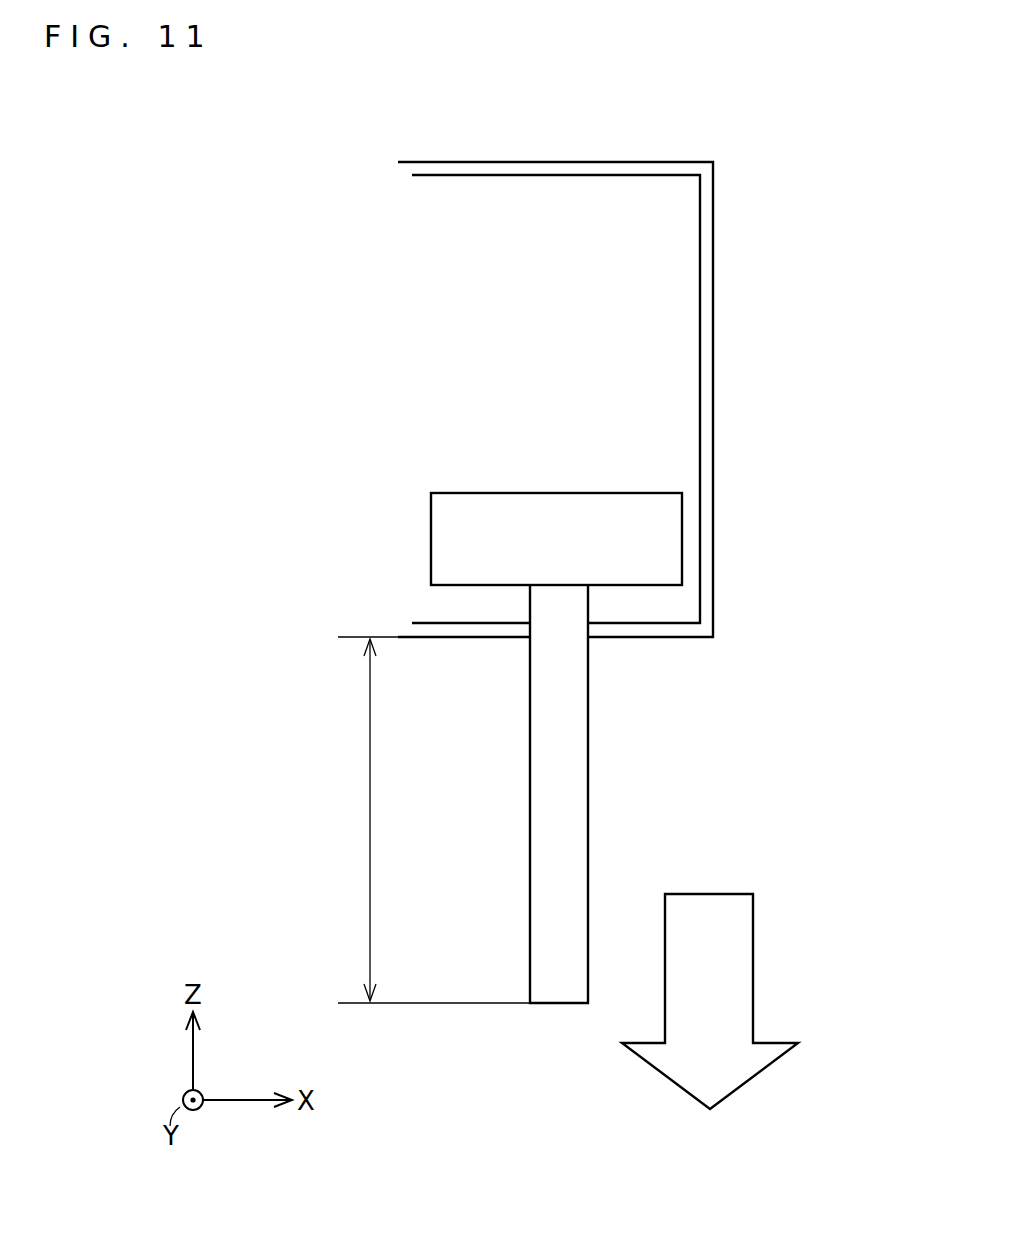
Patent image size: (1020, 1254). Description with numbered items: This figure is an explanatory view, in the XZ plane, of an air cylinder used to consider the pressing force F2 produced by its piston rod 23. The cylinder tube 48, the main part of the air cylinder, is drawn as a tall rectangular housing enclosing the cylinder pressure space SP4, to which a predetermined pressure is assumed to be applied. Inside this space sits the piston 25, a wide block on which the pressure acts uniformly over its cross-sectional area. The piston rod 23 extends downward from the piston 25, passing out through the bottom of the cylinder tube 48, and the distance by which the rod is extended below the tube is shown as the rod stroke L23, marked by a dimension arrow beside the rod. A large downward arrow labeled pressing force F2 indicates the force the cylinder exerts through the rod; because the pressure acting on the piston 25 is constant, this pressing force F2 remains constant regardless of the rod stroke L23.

The cylinder tube 48 is at (533, 162).
The cylinder pressure space SP4 is at (667, 353).
The piston 25 is at (655, 492).
The piston rod 23 is at (589, 778).
The rod stroke L23 is at (423, 820).
The pressing force F2 is at (755, 965).